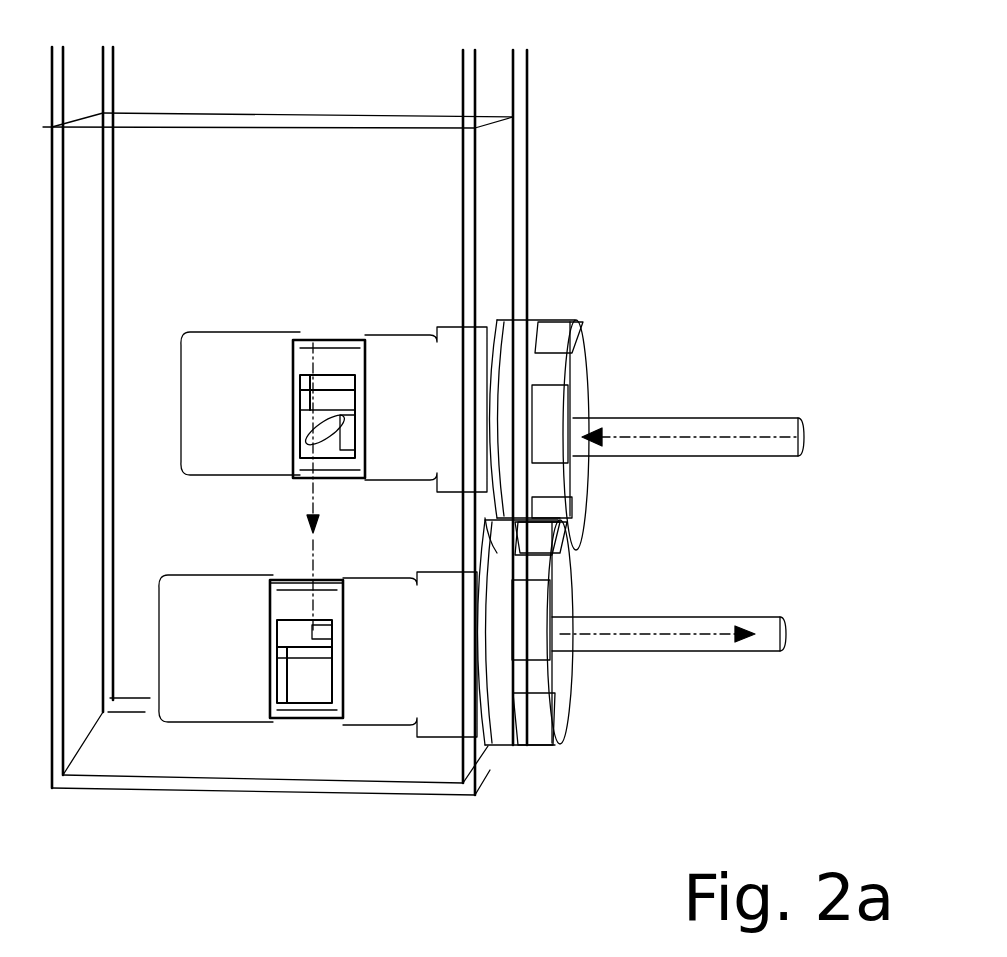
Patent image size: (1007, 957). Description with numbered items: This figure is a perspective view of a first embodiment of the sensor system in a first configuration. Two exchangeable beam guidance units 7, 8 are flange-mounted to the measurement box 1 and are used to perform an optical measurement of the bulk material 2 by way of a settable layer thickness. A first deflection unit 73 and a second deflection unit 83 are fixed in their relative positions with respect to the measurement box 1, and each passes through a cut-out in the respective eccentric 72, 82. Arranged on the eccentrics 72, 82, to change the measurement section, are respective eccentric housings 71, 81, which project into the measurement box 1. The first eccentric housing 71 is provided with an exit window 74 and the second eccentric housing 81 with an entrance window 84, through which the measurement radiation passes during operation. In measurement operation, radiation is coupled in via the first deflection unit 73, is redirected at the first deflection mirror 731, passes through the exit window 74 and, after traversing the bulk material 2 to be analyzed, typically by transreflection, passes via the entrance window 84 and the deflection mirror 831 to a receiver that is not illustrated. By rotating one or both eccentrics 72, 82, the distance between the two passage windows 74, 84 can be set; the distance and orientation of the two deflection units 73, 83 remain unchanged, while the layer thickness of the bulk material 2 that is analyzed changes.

The measurement box 1 is at (556, 80).
The bulk material 2 is at (343, 225).
The first beam guidance unit 7 is at (536, 399).
The first eccentric housing 71 is at (408, 397).
The first eccentric 72 is at (575, 497).
The first deflection unit 73 is at (672, 415).
The exit window 74 is at (338, 480).
The first deflection mirror 731 is at (320, 400).
The second beam guidance unit 8 is at (543, 660).
The second eccentric housing 81 is at (375, 677).
The second eccentric 82 is at (557, 580).
The second deflection unit 83 is at (667, 655).
The entrance window 84 is at (295, 583).
The deflection mirror 831 is at (316, 640).